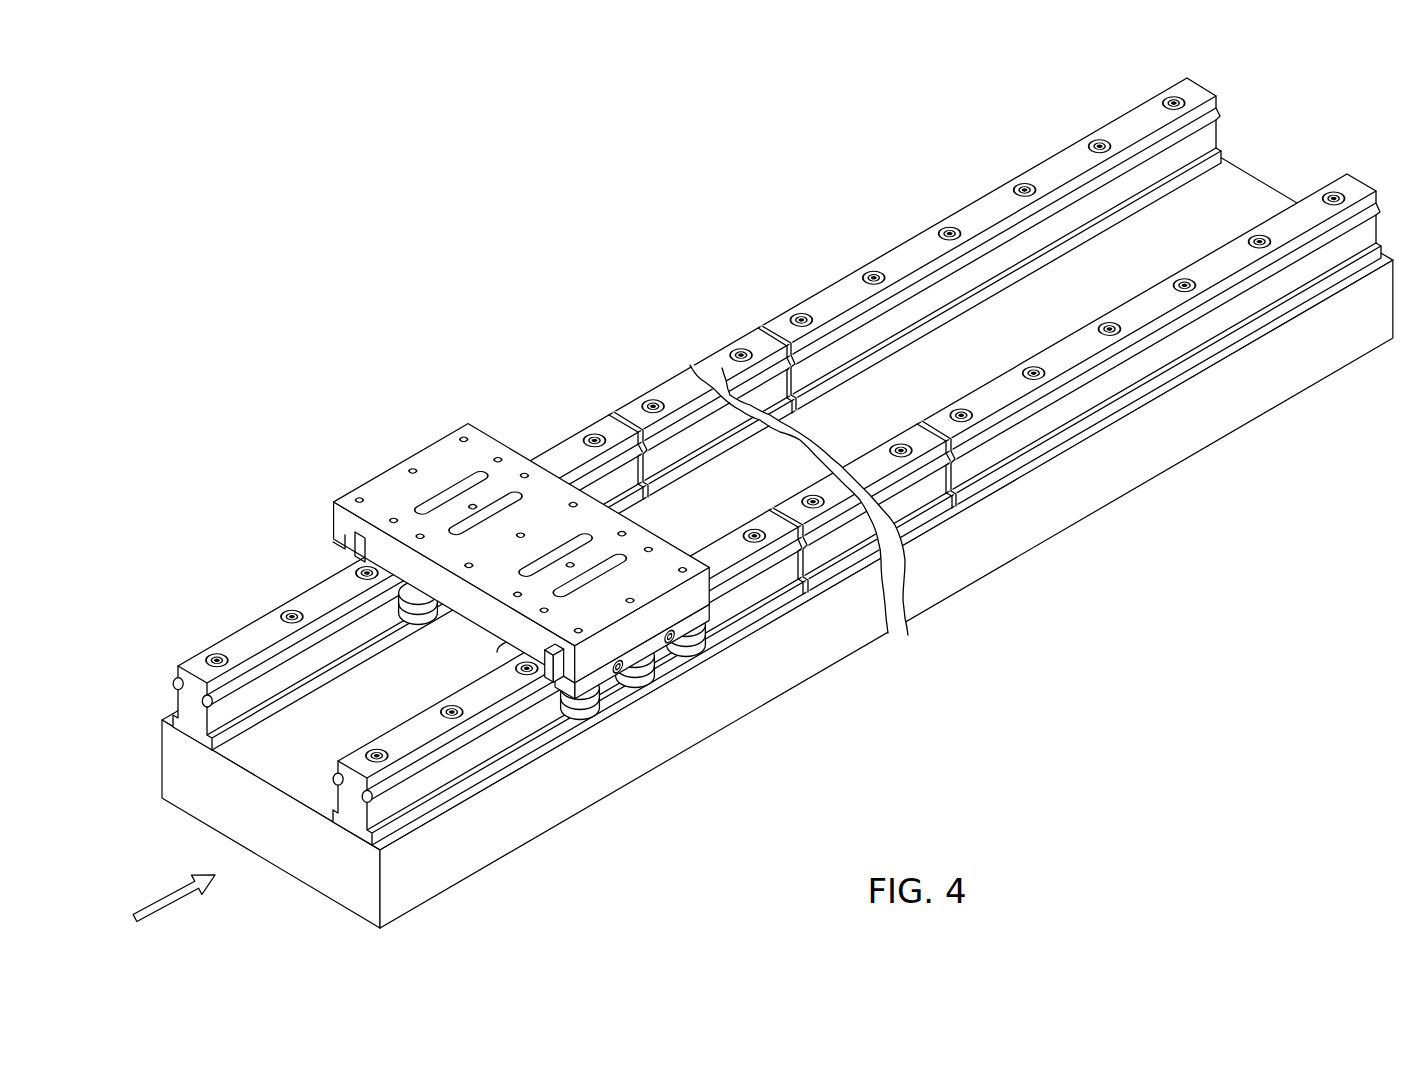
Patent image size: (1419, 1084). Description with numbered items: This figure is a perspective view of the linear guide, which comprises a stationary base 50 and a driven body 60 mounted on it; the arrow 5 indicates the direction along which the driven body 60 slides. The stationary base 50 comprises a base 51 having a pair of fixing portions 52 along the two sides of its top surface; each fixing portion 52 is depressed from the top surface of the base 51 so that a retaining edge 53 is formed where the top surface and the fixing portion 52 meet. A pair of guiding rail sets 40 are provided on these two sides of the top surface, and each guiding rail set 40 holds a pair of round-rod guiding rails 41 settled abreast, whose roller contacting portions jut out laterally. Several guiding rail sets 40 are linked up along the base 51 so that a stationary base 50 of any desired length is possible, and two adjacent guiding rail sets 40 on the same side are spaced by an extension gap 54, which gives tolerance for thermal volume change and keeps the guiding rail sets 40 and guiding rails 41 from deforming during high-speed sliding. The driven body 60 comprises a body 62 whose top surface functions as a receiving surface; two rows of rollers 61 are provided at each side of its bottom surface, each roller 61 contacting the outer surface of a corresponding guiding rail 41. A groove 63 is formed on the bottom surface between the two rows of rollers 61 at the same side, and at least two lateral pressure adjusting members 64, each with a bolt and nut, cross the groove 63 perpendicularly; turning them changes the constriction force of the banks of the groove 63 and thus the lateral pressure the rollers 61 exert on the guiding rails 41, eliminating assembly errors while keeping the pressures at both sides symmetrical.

The moving direction 5 is at (163, 911).
The guiding rail set 40 is at (988, 215).
The guiding rail 41 is at (177, 684).
The stationary base 50 is at (751, 529).
The base 51 is at (277, 855).
The fixing portion 52 is at (420, 838).
The retaining edge 53 is at (301, 700).
The extension gap 54 is at (625, 400).
The driven body 60 is at (521, 567).
The roller 61 is at (627, 692).
The body 62 is at (468, 610).
The groove 63 is at (355, 520).
The lateral pressure adjusting member 64 is at (668, 636).